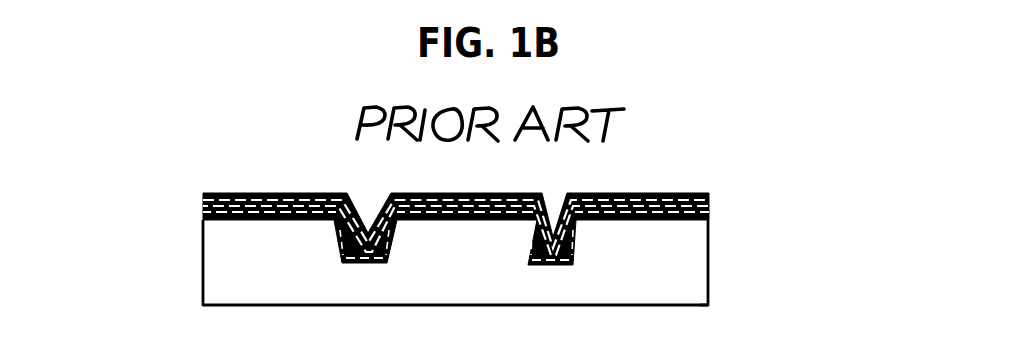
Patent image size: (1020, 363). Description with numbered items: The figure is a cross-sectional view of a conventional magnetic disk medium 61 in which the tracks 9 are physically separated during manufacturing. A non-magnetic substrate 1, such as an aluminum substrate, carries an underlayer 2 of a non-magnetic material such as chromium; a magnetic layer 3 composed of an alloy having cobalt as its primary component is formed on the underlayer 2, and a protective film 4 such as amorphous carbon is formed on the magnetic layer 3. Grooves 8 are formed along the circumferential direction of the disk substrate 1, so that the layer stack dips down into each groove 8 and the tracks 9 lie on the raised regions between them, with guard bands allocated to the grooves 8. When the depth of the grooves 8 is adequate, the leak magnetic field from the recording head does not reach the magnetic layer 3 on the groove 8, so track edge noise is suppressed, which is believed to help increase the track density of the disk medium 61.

The non-magnetic substrate 1 is at (201, 288).
The underlayer 2 is at (204, 216).
The magnetic layer 3 is at (205, 204).
The protective film 4 is at (205, 194).
The groove 8 is at (368, 263).
The track 9 is at (450, 220).
The disk medium 61 is at (708, 305).